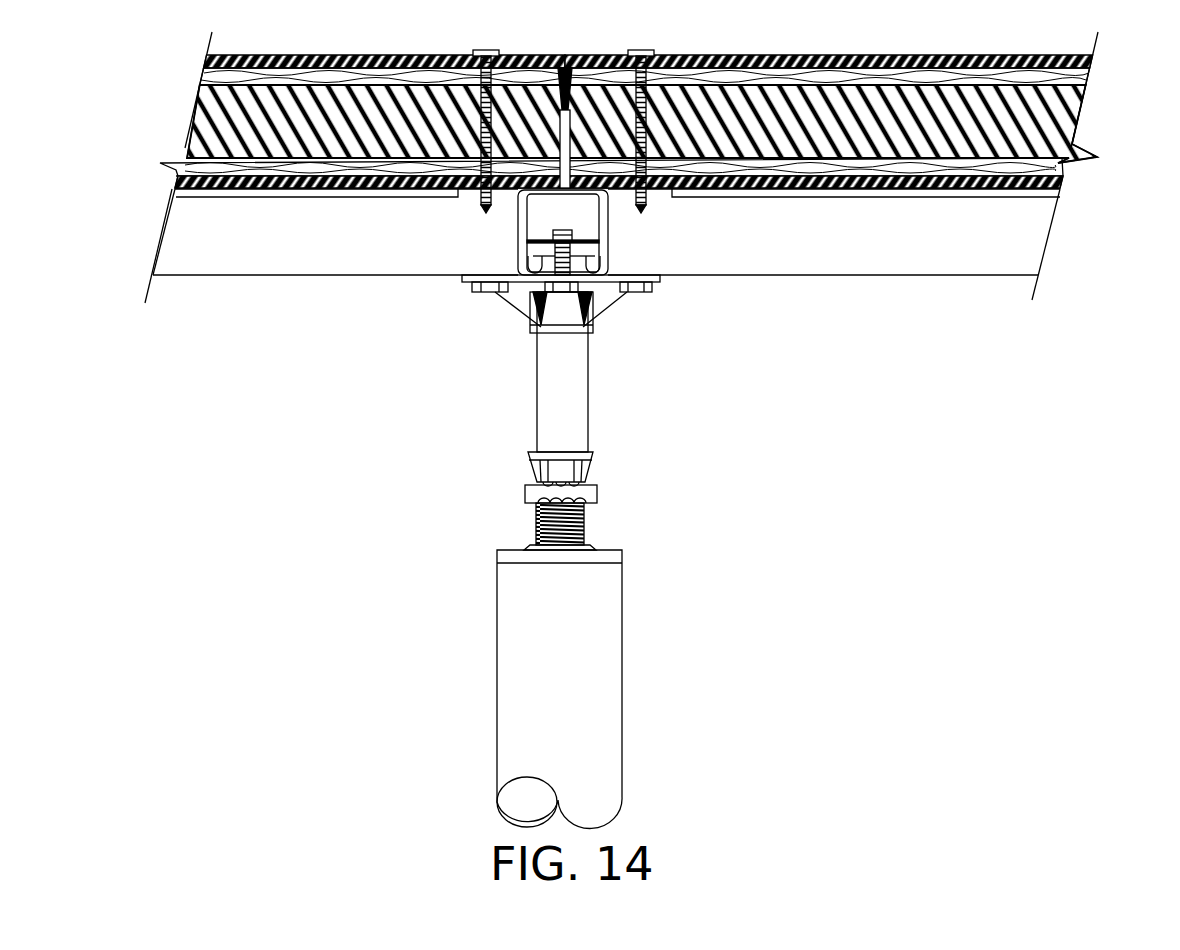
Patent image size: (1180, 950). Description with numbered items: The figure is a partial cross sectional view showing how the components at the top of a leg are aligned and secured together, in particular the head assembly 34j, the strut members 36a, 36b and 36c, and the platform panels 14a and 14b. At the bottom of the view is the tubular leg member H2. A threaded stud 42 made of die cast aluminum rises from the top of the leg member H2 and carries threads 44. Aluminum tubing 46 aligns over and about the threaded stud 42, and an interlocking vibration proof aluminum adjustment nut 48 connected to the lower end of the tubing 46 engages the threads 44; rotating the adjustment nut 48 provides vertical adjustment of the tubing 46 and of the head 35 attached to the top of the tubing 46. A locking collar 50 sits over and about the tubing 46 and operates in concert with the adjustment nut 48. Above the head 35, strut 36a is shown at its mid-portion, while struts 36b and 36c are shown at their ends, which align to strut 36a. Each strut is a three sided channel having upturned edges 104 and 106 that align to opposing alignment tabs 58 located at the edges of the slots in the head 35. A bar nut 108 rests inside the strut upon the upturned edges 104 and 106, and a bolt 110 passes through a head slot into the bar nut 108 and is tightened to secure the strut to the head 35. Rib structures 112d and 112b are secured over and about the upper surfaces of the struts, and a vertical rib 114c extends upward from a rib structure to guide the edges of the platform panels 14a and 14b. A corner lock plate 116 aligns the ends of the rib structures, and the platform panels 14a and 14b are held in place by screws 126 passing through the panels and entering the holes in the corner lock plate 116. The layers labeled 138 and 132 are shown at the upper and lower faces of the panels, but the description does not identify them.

The platform panel 14a is at (829, 41).
The platform panel 14b is at (384, 41).
The screw 126 is at (569, 107).
The vertical rib 114c is at (556, 100).
The upper skin layer 138 is at (690, 74).
The lower skin layer 132 is at (661, 180).
The strut 36a is at (600, 214).
The strut 36b is at (845, 248).
The strut 36c is at (338, 248).
The bolt 110 is at (563, 230).
The bar nut 108 is at (540, 242).
The alignment tab 58 is at (592, 258).
The corner lock plate 116 is at (860, 248).
The rib structure 112d is at (316, 263).
The rib structure 112b is at (1003, 262).
The upturned edge 104 is at (495, 311).
The upturned edge 106 is at (629, 312).
The head 35 is at (601, 372).
The head assembly 34j is at (600, 400).
The aluminum tubing 46 is at (592, 454).
The locking collar 50 is at (604, 469).
The adjustment nut 48 is at (599, 497).
The threads 44 is at (591, 521).
The threaded stud 42 is at (600, 537).
The leg member H2 is at (593, 689).